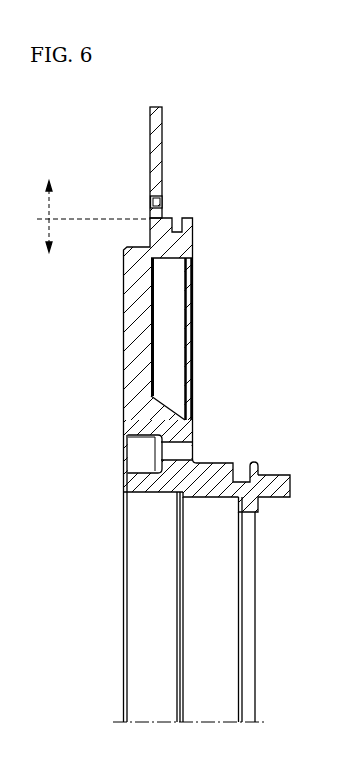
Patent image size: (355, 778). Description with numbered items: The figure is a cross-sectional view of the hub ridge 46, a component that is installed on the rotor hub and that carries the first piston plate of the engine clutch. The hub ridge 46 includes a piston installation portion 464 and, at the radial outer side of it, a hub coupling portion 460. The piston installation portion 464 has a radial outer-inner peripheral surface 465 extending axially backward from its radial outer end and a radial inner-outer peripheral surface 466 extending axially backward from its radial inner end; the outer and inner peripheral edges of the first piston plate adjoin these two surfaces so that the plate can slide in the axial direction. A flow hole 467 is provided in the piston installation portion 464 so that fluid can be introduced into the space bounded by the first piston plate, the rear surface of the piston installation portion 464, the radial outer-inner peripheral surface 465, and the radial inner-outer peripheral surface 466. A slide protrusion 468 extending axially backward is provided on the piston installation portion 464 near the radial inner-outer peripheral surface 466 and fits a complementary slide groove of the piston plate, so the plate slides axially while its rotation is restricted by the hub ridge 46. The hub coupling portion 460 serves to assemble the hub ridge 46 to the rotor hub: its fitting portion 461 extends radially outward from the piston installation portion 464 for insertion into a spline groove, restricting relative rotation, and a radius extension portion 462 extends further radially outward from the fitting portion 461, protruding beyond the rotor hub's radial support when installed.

The hub ridge 46 is at (130, 332).
The hub coupling portion 460 is at (93, 189).
The fitting portion 461 is at (164, 200).
The radius extension portion 462 is at (157, 149).
The piston installation portion 464 is at (53, 248).
The radial outer-inner peripheral surface 465 is at (172, 270).
The radial inner-outer peripheral surface 466 is at (220, 464).
The flow hole 467 is at (184, 447).
The slide protrusion 468 is at (288, 485).